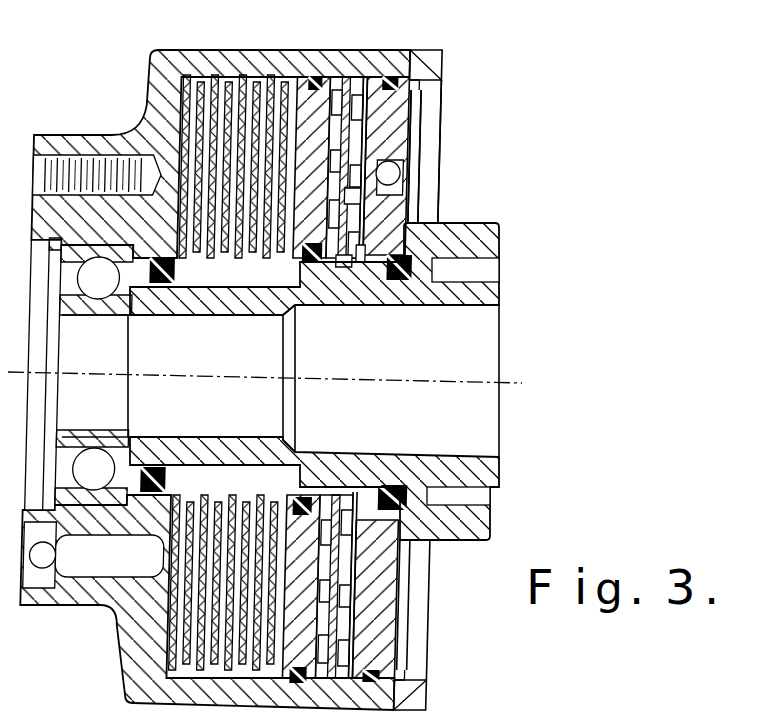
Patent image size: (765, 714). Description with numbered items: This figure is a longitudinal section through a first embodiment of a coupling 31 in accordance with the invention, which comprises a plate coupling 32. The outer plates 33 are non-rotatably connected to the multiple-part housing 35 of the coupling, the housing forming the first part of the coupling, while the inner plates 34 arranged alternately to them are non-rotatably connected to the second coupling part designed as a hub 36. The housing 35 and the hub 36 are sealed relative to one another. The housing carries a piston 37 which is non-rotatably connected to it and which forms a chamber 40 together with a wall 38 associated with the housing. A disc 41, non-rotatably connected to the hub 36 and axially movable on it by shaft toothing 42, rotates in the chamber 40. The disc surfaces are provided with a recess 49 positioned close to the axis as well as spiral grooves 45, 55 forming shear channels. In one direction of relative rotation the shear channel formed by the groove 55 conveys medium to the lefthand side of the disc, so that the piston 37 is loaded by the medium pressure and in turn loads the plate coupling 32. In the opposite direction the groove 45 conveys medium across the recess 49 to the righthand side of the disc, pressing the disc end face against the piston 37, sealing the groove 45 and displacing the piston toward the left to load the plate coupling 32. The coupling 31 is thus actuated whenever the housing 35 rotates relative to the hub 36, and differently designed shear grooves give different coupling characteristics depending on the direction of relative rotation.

The coupling 31 is at (463, 113).
The plate coupling 32 is at (132, 58).
The outer plates 33 is at (210, 92).
The inner plates 34 is at (225, 100).
The multiple-part housing 35 is at (435, 62).
The hub 36 is at (482, 298).
The piston 37 is at (305, 103).
The wall 38 is at (395, 125).
The chamber 40 is at (362, 80).
The disc 41 is at (350, 100).
The shaft toothing 42 is at (344, 271).
The spiral groove 45 is at (338, 157).
The recess 49 is at (362, 262).
The spiral groove 55 is at (357, 197).